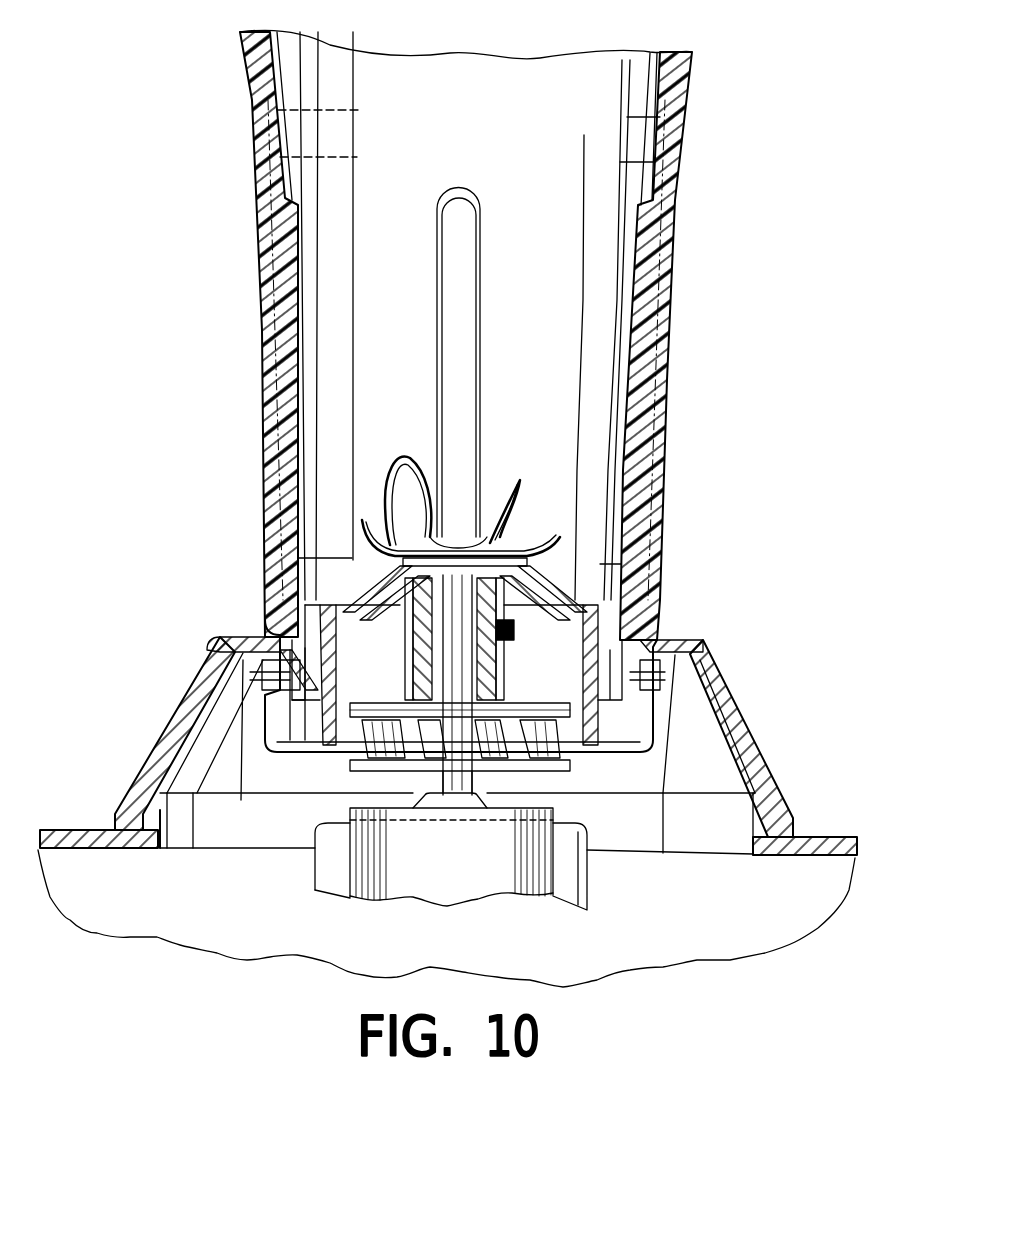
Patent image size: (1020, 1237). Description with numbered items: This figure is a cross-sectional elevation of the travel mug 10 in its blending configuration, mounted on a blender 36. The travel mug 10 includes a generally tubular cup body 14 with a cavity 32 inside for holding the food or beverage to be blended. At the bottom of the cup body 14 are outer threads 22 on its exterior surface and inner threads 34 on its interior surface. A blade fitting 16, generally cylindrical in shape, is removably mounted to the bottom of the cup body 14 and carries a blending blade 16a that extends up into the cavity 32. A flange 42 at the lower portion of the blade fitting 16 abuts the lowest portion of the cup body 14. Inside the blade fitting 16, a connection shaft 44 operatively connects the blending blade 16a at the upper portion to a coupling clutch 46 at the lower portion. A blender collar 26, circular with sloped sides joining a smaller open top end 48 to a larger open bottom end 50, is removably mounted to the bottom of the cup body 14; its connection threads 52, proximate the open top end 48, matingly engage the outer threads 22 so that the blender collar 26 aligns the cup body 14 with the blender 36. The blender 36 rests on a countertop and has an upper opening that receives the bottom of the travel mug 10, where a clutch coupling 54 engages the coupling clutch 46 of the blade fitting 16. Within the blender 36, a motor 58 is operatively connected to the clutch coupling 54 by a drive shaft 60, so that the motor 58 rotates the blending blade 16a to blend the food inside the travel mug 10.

The travel mug 10 is at (205, 198).
The cup body 14 is at (660, 258).
The blade fitting 16 is at (597, 588).
The blending blade 16a is at (397, 493).
The outer threads 22 is at (290, 662).
The blender collar 26 is at (170, 747).
The cavity 32 is at (390, 392).
The inner threads 34 is at (307, 665).
The blender 36 is at (97, 831).
The flange 42 is at (655, 745).
The connection shaft 44 is at (505, 632).
The coupling clutch 46 is at (568, 762).
The open top end 48 is at (230, 638).
The open bottom end 50 is at (143, 848).
The connection threads 52 is at (277, 673).
The clutch coupling 54 is at (350, 765).
The motor 58 is at (585, 870).
The drive shaft 60 is at (447, 798).